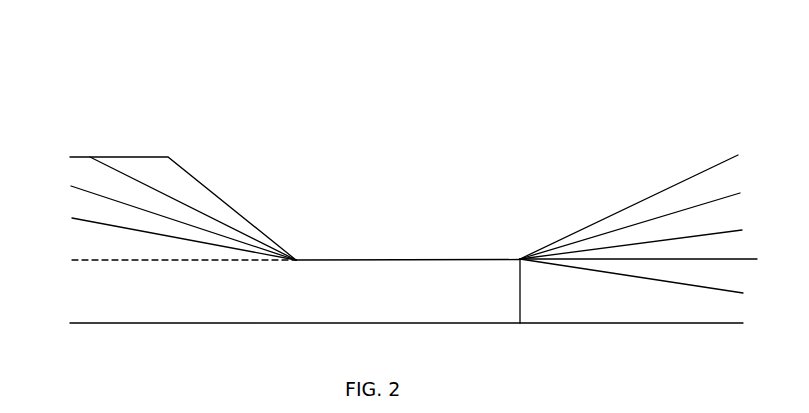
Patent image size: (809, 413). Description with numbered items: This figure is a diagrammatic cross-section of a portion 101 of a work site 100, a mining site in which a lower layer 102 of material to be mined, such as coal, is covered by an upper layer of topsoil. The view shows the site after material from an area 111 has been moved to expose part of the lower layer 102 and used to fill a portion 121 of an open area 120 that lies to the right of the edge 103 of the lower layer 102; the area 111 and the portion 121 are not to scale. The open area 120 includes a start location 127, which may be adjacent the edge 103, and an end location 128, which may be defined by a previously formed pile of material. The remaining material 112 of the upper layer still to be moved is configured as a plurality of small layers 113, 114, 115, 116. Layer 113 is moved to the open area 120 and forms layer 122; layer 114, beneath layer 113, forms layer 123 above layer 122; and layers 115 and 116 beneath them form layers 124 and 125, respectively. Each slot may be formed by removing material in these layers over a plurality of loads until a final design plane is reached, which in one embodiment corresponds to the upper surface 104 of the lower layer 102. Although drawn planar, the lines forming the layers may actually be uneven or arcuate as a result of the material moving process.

The work site 100 is at (434, 100).
The portion of the work site 101 is at (506, 97).
The lower layer 102 is at (195, 297).
The edge of the lower layer 103 is at (520, 290).
The upper surface of the lower layer 104 is at (348, 258).
The area 111 is at (359, 174).
The remaining material 112 is at (244, 149).
The layer 113 is at (162, 178).
The layer 114 is at (97, 178).
The layer 115 is at (96, 210).
The layer 116 is at (100, 239).
The open area 120 is at (581, 177).
The portion of the open area 121 is at (622, 298).
The layer 122 is at (725, 280).
The layer 123 is at (733, 247).
The layer 124 is at (712, 218).
The layer 125 is at (722, 180).
The start location 127 is at (519, 217).
The end location 128 is at (700, 84).